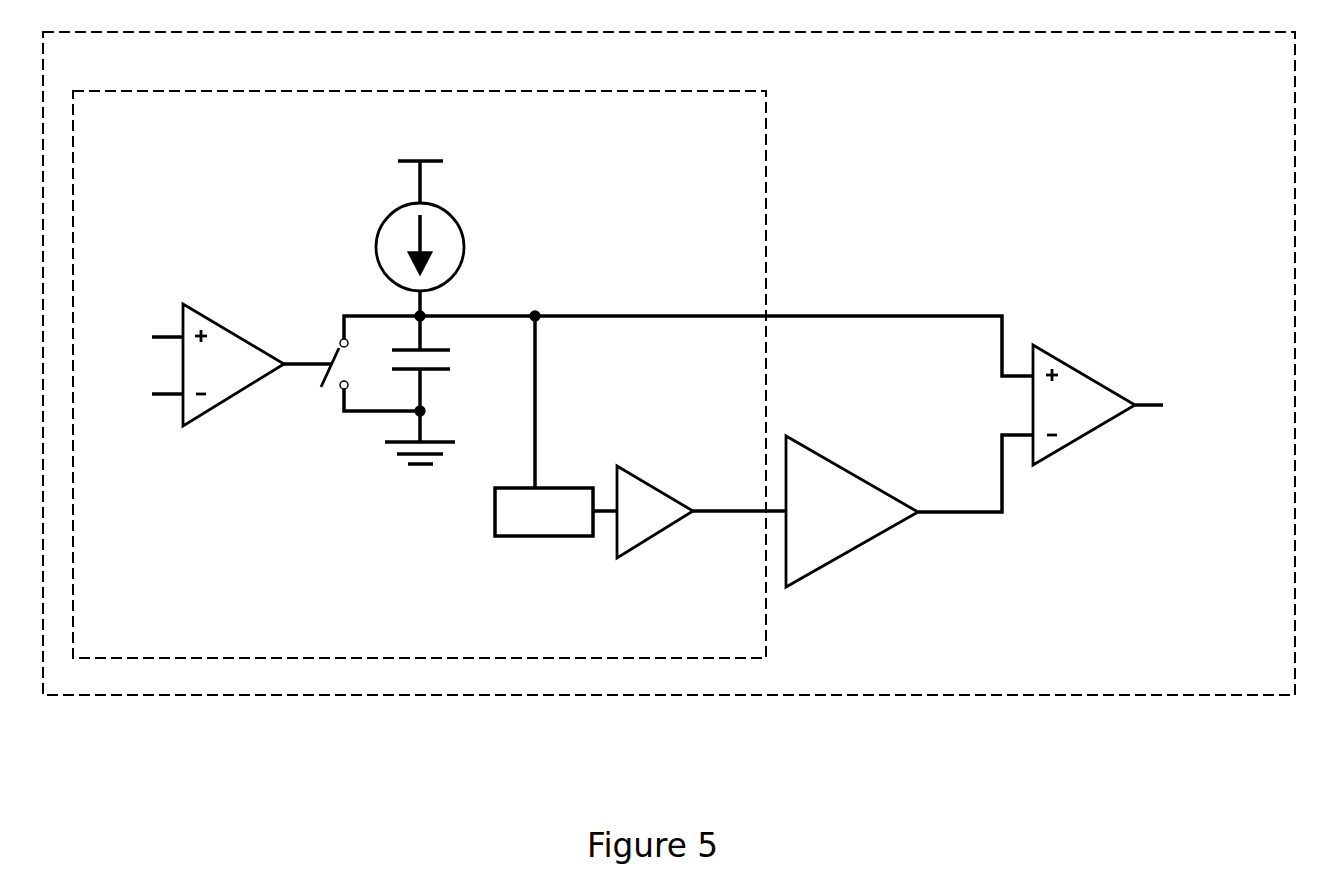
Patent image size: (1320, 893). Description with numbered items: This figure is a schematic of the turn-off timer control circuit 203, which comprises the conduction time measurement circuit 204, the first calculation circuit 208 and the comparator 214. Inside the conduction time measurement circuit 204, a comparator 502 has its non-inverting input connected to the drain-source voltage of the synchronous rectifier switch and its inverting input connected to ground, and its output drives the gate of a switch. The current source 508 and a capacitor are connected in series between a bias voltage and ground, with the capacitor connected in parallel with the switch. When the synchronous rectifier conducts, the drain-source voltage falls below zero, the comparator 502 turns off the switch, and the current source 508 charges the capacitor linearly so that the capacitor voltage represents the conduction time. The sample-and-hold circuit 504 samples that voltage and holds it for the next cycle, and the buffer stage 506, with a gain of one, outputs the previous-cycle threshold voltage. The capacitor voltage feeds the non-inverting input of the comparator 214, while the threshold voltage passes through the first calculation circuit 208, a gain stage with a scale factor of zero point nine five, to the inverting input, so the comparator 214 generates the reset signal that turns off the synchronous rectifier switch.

The turn-off timer control circuit 203 is at (1222, 89).
The conduction time measurement circuit 204 is at (715, 137).
The comparator 502 is at (263, 379).
The sample-and-hold circuit 504 is at (523, 536).
The buffer stage 506 is at (653, 535).
The current source 508 is at (378, 245).
The first calculation circuit 208 is at (825, 563).
The comparator 214 is at (1098, 416).